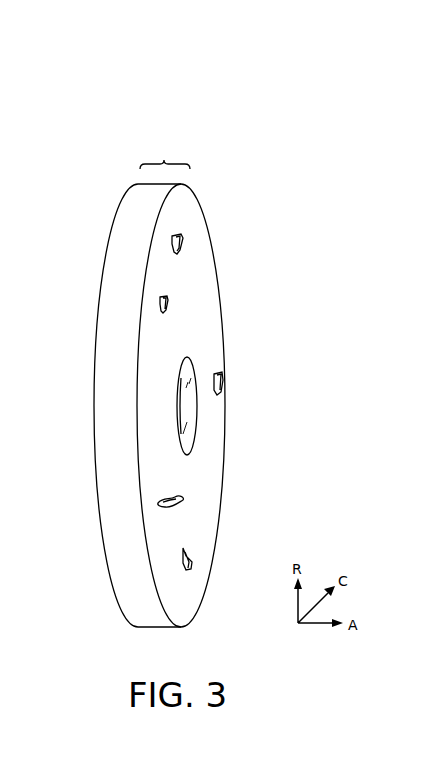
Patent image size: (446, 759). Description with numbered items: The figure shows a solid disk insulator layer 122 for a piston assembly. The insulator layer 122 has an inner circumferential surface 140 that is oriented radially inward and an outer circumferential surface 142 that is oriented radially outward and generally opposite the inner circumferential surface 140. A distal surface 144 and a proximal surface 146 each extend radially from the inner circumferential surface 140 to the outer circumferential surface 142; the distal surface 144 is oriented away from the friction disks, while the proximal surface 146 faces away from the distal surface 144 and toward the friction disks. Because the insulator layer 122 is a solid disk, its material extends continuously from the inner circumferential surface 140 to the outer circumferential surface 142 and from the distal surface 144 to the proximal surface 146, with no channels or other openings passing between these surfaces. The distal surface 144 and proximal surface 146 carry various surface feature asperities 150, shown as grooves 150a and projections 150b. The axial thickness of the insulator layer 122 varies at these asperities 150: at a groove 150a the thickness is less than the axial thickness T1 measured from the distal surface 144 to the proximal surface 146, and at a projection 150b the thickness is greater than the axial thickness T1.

The insulator layer 122 is at (135, 365).
The outer circumferential surface 142 is at (104, 166).
The distal surface 144 is at (94, 445).
The proximal surface 146 is at (197, 347).
The inner circumferential surface 140 is at (188, 408).
The surface feature asperities 150 is at (171, 302).
The groove 150a is at (185, 243).
The projection 150b is at (226, 380).
The axial thickness T1 is at (165, 156).